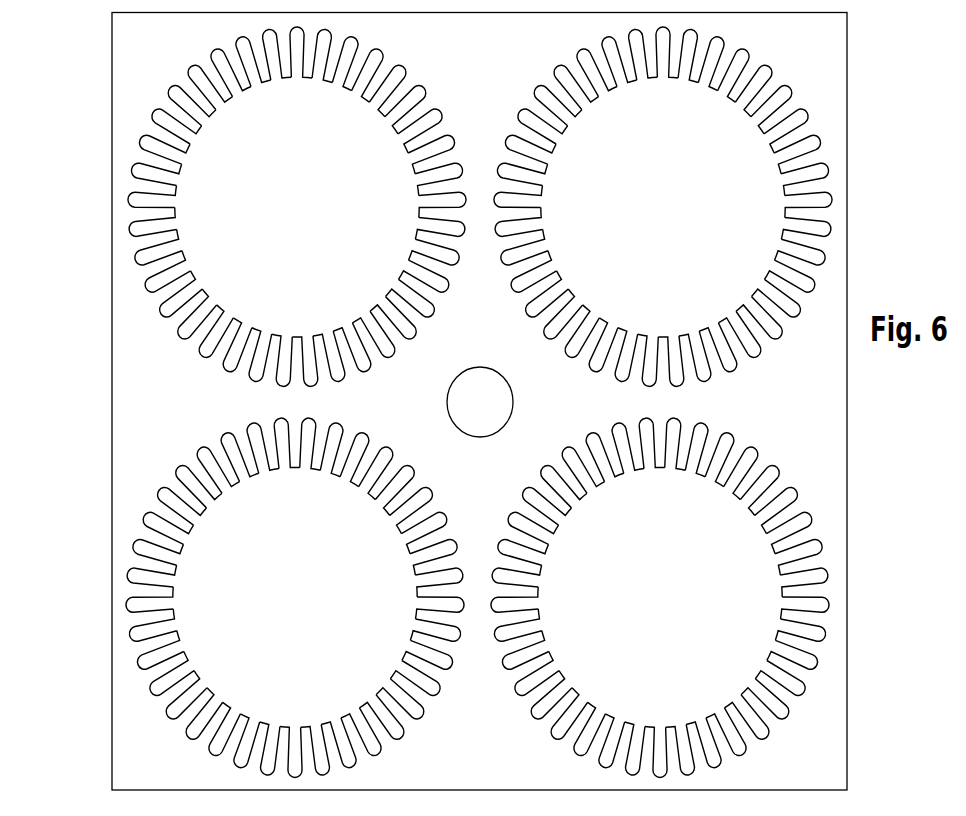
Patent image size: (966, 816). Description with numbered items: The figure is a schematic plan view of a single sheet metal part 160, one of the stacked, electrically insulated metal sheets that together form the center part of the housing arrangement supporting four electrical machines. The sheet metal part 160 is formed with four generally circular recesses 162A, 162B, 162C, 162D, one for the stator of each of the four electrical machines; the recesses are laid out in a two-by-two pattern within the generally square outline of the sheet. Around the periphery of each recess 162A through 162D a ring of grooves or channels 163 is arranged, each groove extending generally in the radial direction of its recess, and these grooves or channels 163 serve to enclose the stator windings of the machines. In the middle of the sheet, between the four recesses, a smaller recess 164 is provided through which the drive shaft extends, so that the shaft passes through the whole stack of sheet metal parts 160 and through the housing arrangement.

The sheet metal part 160 is at (832, 417).
The circular recess 162A is at (742, 153).
The circular recess 162B is at (207, 597).
The circular recess 162C is at (699, 598).
The circular recess 162D is at (248, 150).
The grooves or channels 163 is at (812, 663).
The recess 164 is at (500, 407).